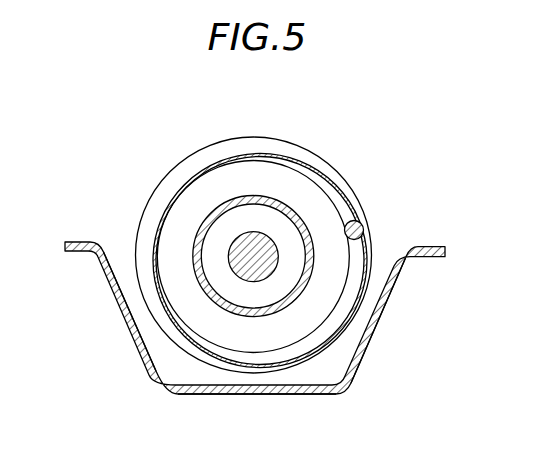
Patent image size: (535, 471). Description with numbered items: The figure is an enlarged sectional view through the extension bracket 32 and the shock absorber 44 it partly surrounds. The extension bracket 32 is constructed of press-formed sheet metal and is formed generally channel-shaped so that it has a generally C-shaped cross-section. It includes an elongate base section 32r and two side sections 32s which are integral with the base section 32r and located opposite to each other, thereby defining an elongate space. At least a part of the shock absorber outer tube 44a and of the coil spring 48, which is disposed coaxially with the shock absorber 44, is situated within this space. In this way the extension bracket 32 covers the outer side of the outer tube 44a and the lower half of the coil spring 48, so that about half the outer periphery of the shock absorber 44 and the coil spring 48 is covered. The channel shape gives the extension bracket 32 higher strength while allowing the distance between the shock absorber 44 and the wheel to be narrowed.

The extension bracket 32 is at (368, 350).
The side sections 32s is at (122, 310).
The base section 32r is at (246, 395).
The shock absorber 44 is at (303, 141).
The outer tube 44a is at (236, 195).
The coil spring 48 is at (158, 191).